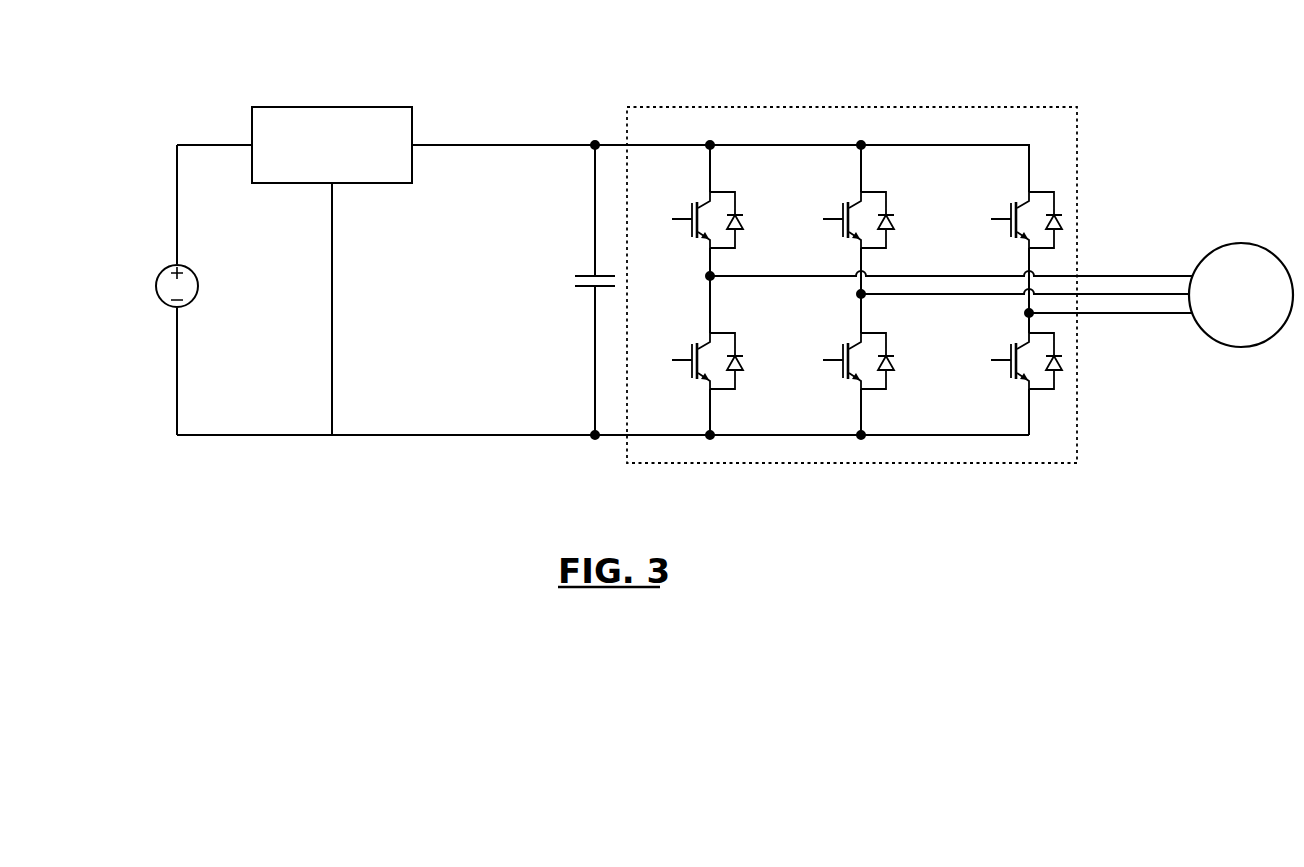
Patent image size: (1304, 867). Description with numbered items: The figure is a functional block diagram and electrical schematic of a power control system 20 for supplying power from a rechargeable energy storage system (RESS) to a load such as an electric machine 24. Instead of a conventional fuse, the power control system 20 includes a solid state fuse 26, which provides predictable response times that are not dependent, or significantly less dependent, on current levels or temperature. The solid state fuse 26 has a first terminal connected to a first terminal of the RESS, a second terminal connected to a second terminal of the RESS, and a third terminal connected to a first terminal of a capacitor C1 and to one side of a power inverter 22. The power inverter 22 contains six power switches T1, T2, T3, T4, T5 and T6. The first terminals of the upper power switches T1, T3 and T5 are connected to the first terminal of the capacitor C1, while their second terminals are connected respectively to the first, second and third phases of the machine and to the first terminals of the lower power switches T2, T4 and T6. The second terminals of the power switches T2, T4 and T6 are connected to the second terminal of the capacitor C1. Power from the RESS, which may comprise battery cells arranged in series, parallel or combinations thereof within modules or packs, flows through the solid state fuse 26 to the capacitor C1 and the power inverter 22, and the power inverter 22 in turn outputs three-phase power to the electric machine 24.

The power control system 20 is at (133, 64).
The power inverter 22 is at (810, 107).
The electric machine 24 is at (1243, 243).
The solid state fuse 26 is at (251, 128).
The capacitor C1 is at (576, 290).
The power switch T1 is at (700, 215).
The power switch T2 is at (700, 366).
The power switch T3 is at (851, 215).
The power switch T4 is at (851, 366).
The power switch T5 is at (1019, 215).
The power switch T6 is at (1019, 366).